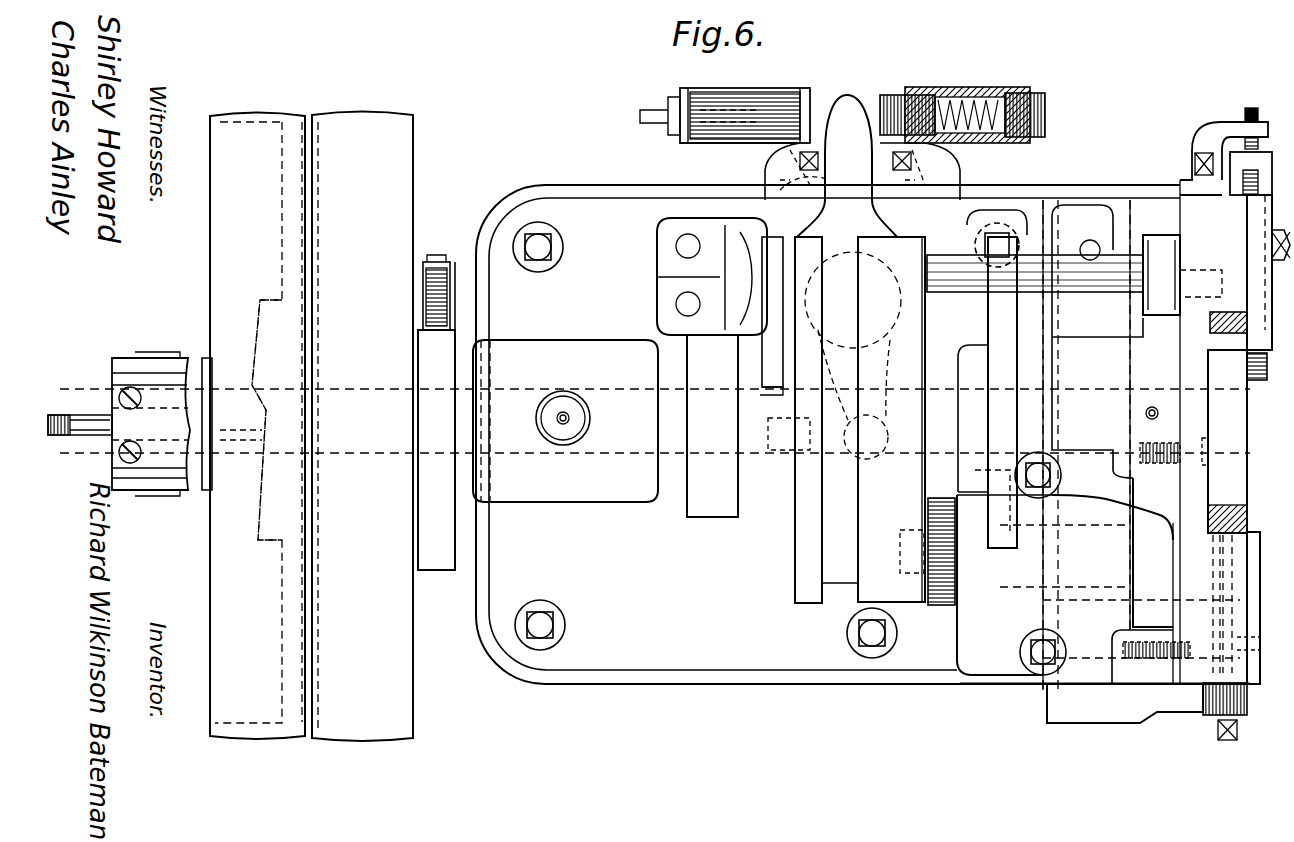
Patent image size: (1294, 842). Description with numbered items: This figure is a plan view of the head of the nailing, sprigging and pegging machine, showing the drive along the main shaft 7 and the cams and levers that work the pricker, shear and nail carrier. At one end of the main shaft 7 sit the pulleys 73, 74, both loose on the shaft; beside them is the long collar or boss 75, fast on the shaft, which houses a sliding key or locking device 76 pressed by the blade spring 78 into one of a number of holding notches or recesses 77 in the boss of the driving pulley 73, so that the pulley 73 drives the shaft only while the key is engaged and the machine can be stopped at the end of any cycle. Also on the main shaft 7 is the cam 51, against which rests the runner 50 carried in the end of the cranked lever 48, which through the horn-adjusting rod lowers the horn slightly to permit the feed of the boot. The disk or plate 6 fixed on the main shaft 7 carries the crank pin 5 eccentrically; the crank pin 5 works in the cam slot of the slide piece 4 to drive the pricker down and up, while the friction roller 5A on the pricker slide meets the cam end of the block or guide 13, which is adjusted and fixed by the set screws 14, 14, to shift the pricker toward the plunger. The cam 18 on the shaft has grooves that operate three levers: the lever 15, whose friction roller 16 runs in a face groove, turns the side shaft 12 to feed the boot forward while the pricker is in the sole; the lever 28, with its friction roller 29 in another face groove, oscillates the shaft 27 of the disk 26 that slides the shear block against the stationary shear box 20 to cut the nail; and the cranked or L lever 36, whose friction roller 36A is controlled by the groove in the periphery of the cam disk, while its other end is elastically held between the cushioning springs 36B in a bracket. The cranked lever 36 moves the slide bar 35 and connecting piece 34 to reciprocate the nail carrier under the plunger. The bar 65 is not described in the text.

The slide piece 4 is at (1227, 422).
The crank pin 5 is at (1210, 440).
The friction roller 5A is at (1250, 380).
The disk or plate 6 is at (868, 435).
The main shaft 7 is at (1024, 392).
The side shaft 12 is at (940, 258).
The block or guide 13 is at (1258, 303).
The set screws 14 is at (1248, 112).
The lever 15 is at (773, 355).
The friction roller 16 is at (793, 452).
The cam 18 is at (840, 586).
The shear box 20 is at (1247, 632).
The disk 26 is at (1140, 563).
The shaft 27 is at (1003, 585).
The lever 28 is at (940, 605).
The friction roller 29 is at (900, 547).
The connecting piece 34 is at (1125, 703).
The slide bar 35 is at (1062, 645).
The cranked or L lever 36 is at (820, 166).
The friction roller 36A is at (873, 452).
The cushioning springs 36B is at (806, 100).
The cranked lever 48 is at (435, 260).
The runner 50 is at (455, 270).
The cam 51 is at (436, 568).
The bar 65 is at (699, 517).
The pulley 73 is at (257, 426).
The pulley 74 is at (362, 427).
The collar or boss 75 is at (122, 360).
The sliding key or locking device 76 is at (113, 412).
The holding notches or recesses 77 is at (265, 416).
The blade spring 78 is at (104, 437).